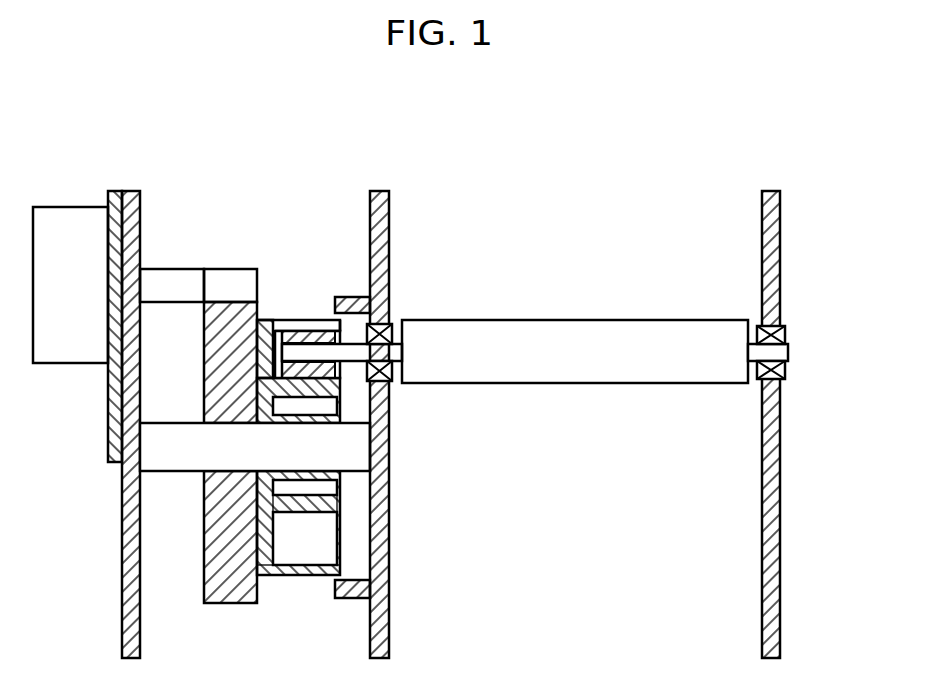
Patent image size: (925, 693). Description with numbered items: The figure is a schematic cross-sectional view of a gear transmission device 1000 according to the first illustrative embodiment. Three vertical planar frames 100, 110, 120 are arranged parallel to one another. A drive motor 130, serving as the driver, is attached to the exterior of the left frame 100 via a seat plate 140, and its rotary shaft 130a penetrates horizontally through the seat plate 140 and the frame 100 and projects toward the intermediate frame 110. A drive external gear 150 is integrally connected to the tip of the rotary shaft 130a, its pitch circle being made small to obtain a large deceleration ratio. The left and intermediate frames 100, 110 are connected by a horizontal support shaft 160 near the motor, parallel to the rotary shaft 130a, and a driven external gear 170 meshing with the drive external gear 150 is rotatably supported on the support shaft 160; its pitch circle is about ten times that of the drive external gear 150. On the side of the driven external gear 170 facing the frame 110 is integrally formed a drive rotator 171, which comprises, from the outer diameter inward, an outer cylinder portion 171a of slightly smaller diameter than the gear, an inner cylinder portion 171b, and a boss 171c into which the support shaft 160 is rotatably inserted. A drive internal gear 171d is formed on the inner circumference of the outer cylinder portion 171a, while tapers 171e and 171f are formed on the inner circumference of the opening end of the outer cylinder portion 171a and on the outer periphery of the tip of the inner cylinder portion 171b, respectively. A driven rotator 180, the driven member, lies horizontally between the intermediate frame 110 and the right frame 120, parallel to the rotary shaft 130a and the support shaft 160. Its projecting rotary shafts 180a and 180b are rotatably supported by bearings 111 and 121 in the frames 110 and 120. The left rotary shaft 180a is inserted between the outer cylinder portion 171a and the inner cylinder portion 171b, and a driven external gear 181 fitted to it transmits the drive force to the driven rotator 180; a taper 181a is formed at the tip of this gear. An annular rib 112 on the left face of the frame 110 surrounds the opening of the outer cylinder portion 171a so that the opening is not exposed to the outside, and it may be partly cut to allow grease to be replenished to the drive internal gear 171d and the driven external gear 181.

The gear transmission device 1000 is at (258, 153).
The planar frame 100 is at (126, 602).
The planar frame 110 is at (380, 625).
The bearing 111 is at (394, 340).
The annular rib 112 is at (352, 296).
The planar frame 120 is at (779, 568).
The bearing 121 is at (785, 371).
The drive motor 130 is at (73, 206).
The rotary shaft 130a is at (165, 268).
The seat plate 140 is at (110, 410).
The drive external gear 150 is at (226, 268).
The support shaft 160 is at (165, 422).
The driven external gear 170 is at (207, 553).
The drive rotator 171 is at (355, 460).
The outer cylinder portion 171a is at (266, 319).
The inner cylinder portion 171b is at (304, 402).
The boss 171c is at (338, 485).
The drive internal gear 171d is at (340, 331).
The taper 171e is at (338, 568).
The taper 171f is at (338, 510).
The driven rotator 180 is at (586, 319).
The rotary shaft 180a is at (352, 354).
The rotary shaft 180b is at (799, 361).
The driven external gear 181 is at (242, 317).
The taper 181a is at (279, 377).